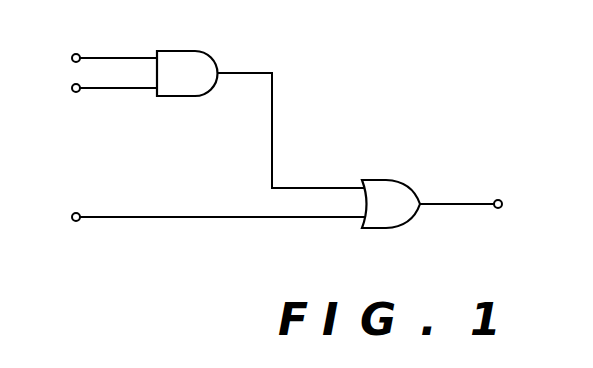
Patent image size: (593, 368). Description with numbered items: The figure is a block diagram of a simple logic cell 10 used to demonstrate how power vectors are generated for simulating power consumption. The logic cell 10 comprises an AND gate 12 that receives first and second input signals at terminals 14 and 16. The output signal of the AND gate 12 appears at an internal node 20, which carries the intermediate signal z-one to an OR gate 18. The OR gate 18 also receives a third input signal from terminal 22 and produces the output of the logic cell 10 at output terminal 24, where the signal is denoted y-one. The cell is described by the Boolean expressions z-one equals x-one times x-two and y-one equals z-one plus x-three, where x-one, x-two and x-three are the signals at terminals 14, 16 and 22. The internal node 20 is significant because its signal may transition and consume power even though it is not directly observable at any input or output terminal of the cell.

The logic cell 10 is at (207, 283).
The AND gate 12 is at (176, 50).
The terminal 14 is at (73, 54).
The terminal 16 is at (74, 93).
The OR gate 18 is at (377, 180).
The internal node 20 is at (272, 143).
The terminal 22 is at (75, 222).
The output terminal 24 is at (496, 200).